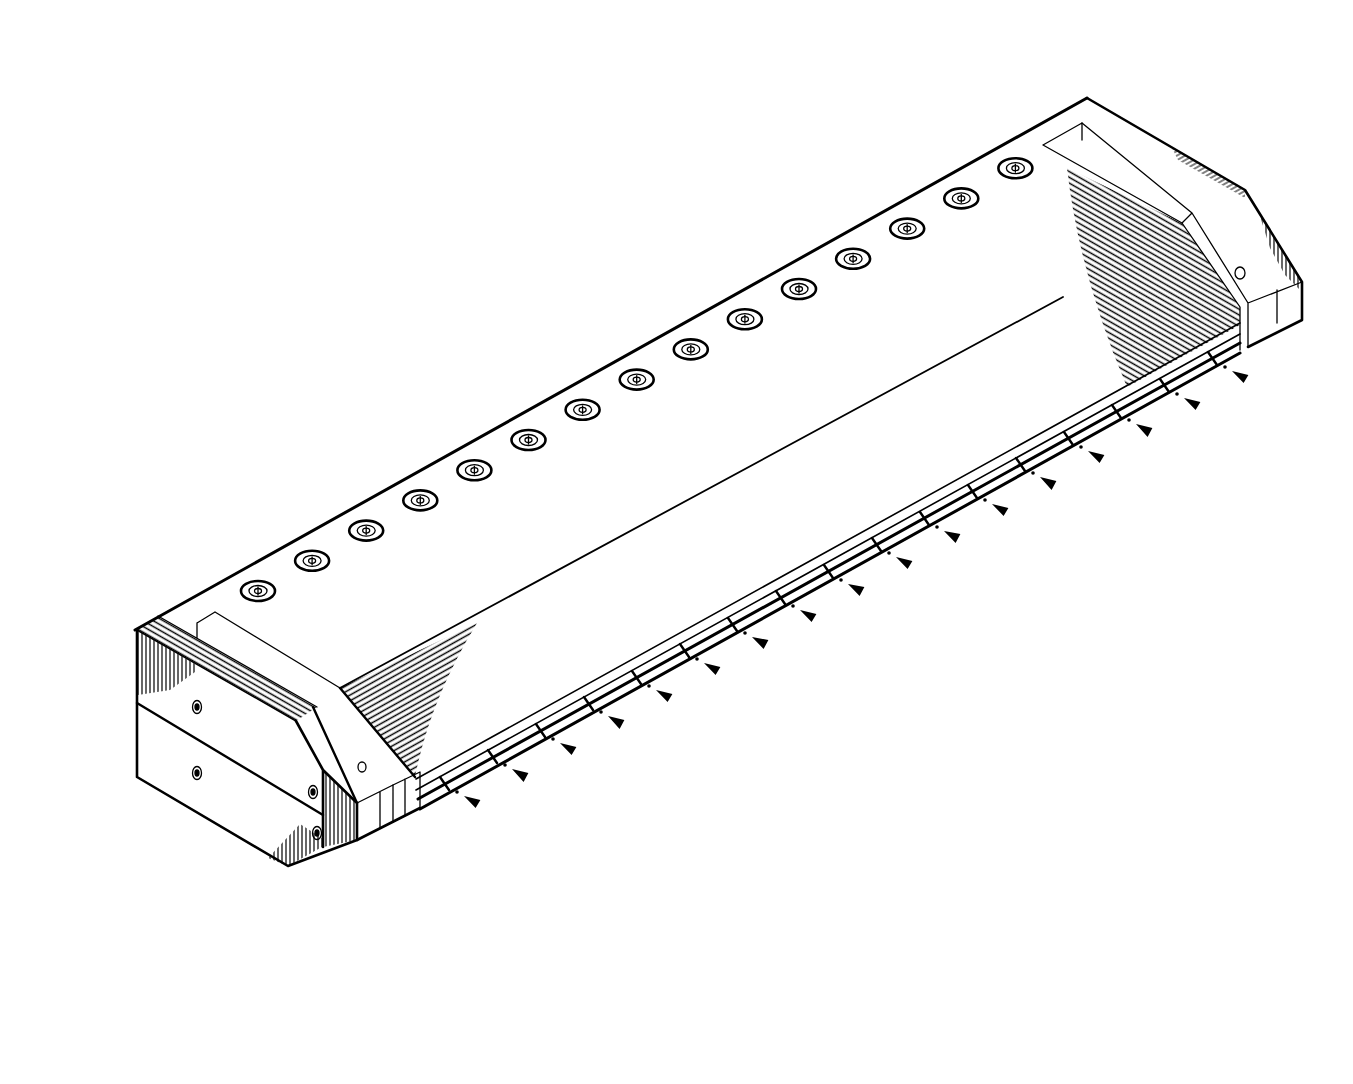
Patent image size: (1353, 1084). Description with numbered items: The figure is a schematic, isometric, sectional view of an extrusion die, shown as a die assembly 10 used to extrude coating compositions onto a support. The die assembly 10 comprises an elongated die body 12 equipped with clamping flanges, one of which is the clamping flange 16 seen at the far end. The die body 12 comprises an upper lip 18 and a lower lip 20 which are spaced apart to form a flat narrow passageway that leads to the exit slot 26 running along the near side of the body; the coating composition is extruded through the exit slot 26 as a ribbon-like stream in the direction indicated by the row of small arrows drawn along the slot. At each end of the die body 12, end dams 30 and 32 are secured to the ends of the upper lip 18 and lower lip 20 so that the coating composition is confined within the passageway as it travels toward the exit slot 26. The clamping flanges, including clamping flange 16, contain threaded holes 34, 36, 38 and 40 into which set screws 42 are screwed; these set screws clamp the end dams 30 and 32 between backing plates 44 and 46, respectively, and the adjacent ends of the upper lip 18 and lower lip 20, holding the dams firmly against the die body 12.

The die assembly 10 is at (472, 407).
The die body 12 is at (761, 280).
The clamping flange 16 is at (1147, 136).
The upper lip 18 is at (708, 422).
The lower lip 20 is at (446, 814).
The exit slot 26 is at (1115, 428).
The end dam 30 is at (412, 812).
The end dam 32 is at (1241, 348).
The threaded hole 34 is at (187, 707).
The threaded hole 36 is at (196, 790).
The threaded hole 38 is at (305, 795).
The threaded hole 40 is at (307, 833).
The set screw 42 is at (190, 775).
The backing plate 44 is at (402, 818).
The backing plate 46 is at (1218, 263).